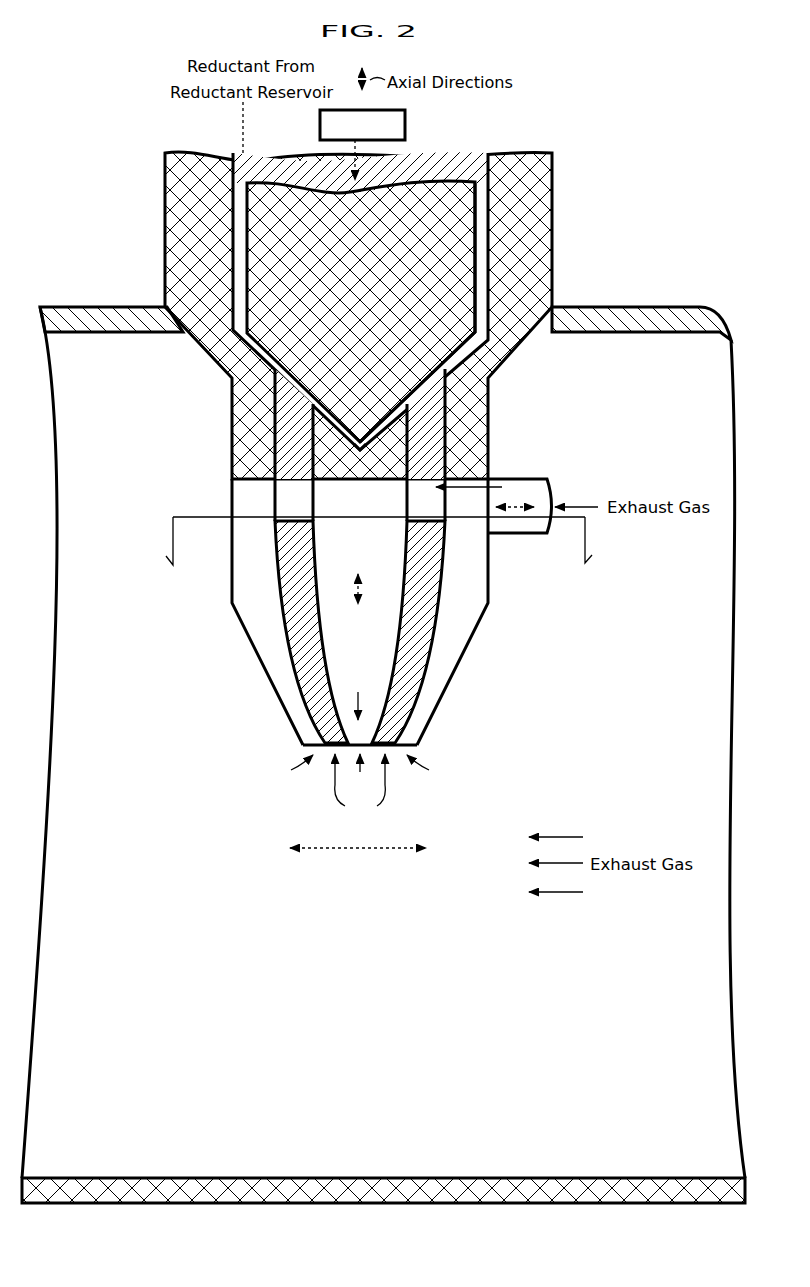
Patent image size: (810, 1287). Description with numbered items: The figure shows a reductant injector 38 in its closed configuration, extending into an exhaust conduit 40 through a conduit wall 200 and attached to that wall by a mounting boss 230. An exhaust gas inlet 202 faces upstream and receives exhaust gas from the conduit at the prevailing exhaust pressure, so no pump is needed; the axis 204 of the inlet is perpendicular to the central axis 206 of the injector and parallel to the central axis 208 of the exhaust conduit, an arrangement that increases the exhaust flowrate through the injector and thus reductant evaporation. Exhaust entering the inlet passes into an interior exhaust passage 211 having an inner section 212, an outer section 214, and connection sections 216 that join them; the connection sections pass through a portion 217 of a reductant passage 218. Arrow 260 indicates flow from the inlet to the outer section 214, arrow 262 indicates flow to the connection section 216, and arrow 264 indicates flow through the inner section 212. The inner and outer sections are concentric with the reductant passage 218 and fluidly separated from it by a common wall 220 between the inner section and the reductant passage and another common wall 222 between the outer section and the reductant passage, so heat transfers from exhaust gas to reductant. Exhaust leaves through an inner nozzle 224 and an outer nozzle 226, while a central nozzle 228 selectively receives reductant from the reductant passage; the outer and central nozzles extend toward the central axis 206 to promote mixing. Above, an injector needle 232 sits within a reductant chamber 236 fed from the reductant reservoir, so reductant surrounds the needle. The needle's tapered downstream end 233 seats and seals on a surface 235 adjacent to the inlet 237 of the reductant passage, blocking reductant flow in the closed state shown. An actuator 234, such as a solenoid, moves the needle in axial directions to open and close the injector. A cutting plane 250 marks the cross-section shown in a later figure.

The reductant injector 38 is at (660, 181).
The exhaust conduit 40 is at (598, 768).
The conduit wall 200 is at (628, 316).
The exhaust gas inlet 202 is at (562, 494).
The axis of the exhaust gas inlet 204 is at (518, 504).
The central axis of the reductant injector 206 is at (361, 596).
The central axis of the exhaust conduit 208 is at (366, 848).
The interior exhaust passage 211 is at (496, 578).
The inner section 212 is at (373, 563).
The outer section 214 is at (267, 561).
The connection sections 216 is at (308, 513).
The portion of the reductant passage 217 is at (322, 502).
The reductant passage 218 is at (426, 599).
The common wall 220 is at (397, 661).
The common wall 222 is at (283, 643).
The inner nozzle 224 is at (360, 770).
The outer nozzle 226 is at (362, 766).
The central nozzle 228 is at (360, 786).
The mounting boss 230 is at (178, 292).
The injector needle 232 is at (373, 270).
The downstream end 233 is at (362, 452).
The actuator 234 is at (405, 137).
The surface 235 is at (337, 399).
The reductant chamber 236 is at (484, 196).
The inlet of the reductant passage 237 is at (292, 406).
The cutting plane 250 is at (210, 517).
The arrow 260 is at (490, 500).
The arrow 262 is at (470, 527).
The arrow 264 is at (358, 696).